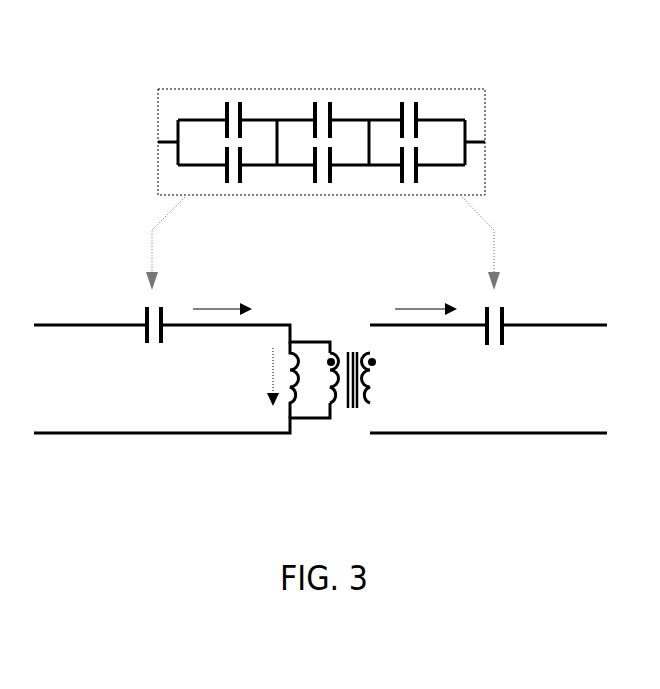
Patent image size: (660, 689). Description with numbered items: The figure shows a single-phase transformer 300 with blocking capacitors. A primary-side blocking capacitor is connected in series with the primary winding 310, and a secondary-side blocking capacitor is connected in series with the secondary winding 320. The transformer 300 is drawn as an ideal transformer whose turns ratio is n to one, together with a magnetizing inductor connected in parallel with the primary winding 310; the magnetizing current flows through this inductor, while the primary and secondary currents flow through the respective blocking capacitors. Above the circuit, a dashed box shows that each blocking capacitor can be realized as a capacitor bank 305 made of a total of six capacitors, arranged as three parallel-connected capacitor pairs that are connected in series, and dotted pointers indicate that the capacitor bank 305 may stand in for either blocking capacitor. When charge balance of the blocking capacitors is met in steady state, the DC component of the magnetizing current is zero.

The single-phase transformer 300 is at (586, 196).
The capacitor bank 305 is at (485, 113).
The primary winding 310 is at (337, 335).
The secondary winding 320 is at (360, 335).